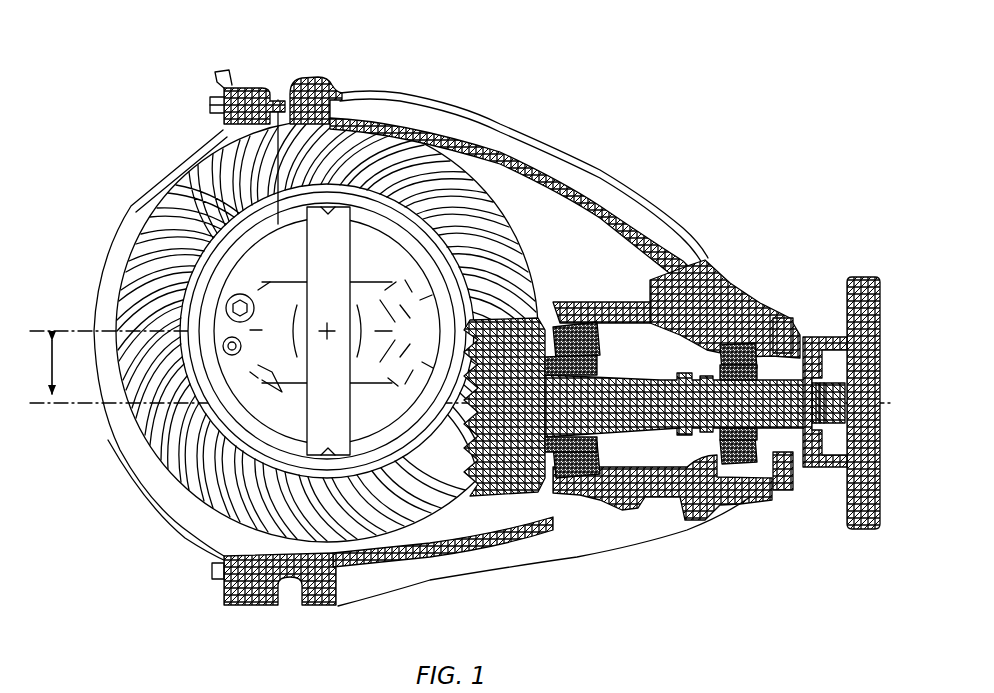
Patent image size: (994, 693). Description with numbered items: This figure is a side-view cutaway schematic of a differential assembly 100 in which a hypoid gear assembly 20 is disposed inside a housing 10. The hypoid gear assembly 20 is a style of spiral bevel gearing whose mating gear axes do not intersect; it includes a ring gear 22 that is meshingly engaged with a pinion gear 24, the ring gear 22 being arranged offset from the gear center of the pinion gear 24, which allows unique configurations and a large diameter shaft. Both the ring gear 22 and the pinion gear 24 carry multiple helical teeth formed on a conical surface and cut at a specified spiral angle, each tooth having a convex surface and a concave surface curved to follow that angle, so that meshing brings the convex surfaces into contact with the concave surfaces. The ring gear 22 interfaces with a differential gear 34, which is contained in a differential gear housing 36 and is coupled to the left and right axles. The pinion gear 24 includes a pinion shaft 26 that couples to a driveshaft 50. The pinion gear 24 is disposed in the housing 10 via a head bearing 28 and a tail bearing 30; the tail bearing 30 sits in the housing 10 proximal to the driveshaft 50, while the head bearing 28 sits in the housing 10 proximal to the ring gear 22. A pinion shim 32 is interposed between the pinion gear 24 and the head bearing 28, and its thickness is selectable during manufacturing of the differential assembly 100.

The differential assembly 100 is at (597, 84).
The housing 10 is at (470, 108).
The hypoid gear assembly 20 is at (524, 244).
The ring gear 22 is at (181, 196).
The pinion gear 24 is at (612, 375).
The pinion shaft 26 is at (737, 467).
The head bearing 28 is at (587, 486).
The tail bearing 30 is at (748, 470).
The pinion shim 32 is at (548, 440).
The differential gear 34 is at (333, 300).
The differential gear housing 36 is at (278, 98).
The driveshaft 50 is at (862, 530).